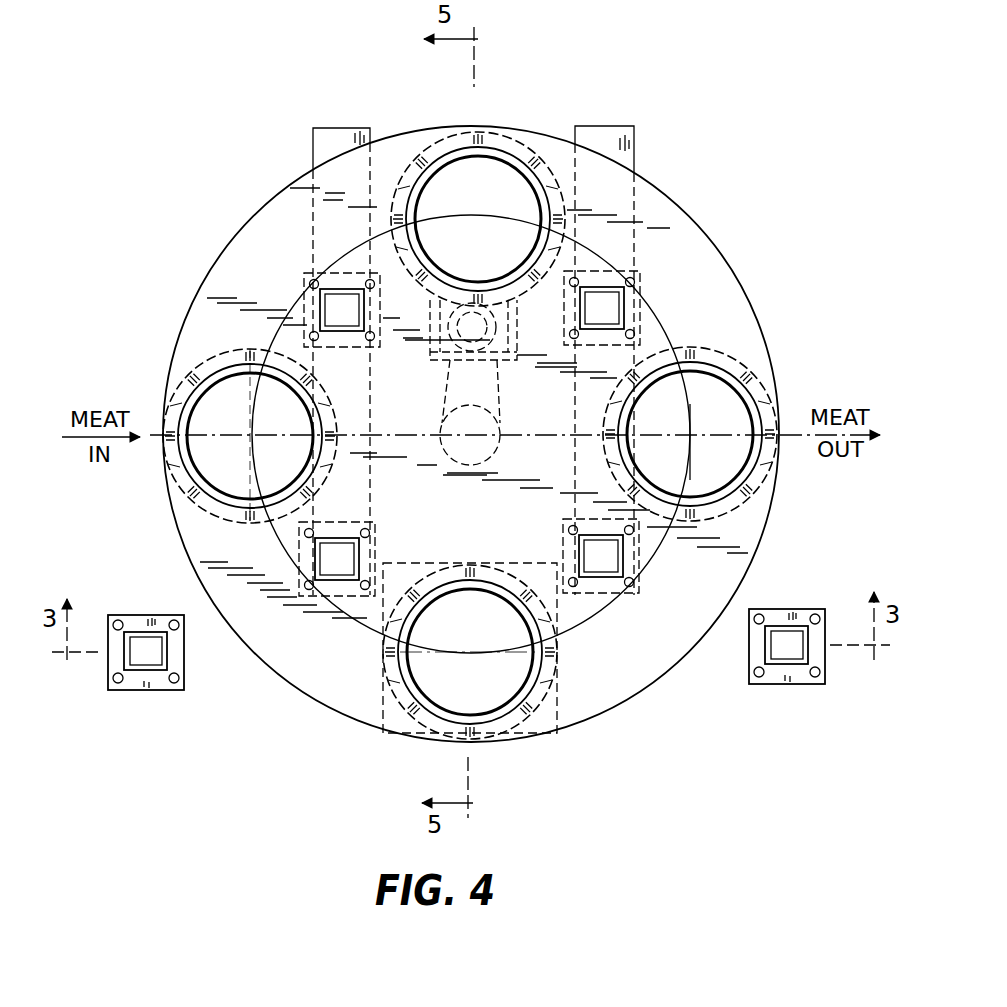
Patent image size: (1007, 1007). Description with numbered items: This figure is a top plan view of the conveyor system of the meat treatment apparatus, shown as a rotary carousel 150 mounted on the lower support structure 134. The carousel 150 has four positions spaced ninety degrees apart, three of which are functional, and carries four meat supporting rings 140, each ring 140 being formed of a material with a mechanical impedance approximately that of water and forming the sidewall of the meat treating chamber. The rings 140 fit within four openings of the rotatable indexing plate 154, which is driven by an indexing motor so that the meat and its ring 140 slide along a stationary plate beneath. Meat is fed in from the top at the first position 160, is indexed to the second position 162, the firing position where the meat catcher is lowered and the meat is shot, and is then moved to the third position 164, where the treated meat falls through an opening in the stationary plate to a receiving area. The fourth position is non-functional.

The lower support structure 134 is at (600, 133).
The meat supporting ring 140 is at (440, 147).
The rotary carousel 150 is at (707, 185).
The rotatable indexing plate 154 is at (338, 687).
The first position 160 is at (183, 505).
The second position 162 is at (448, 745).
The third position 164 is at (785, 392).